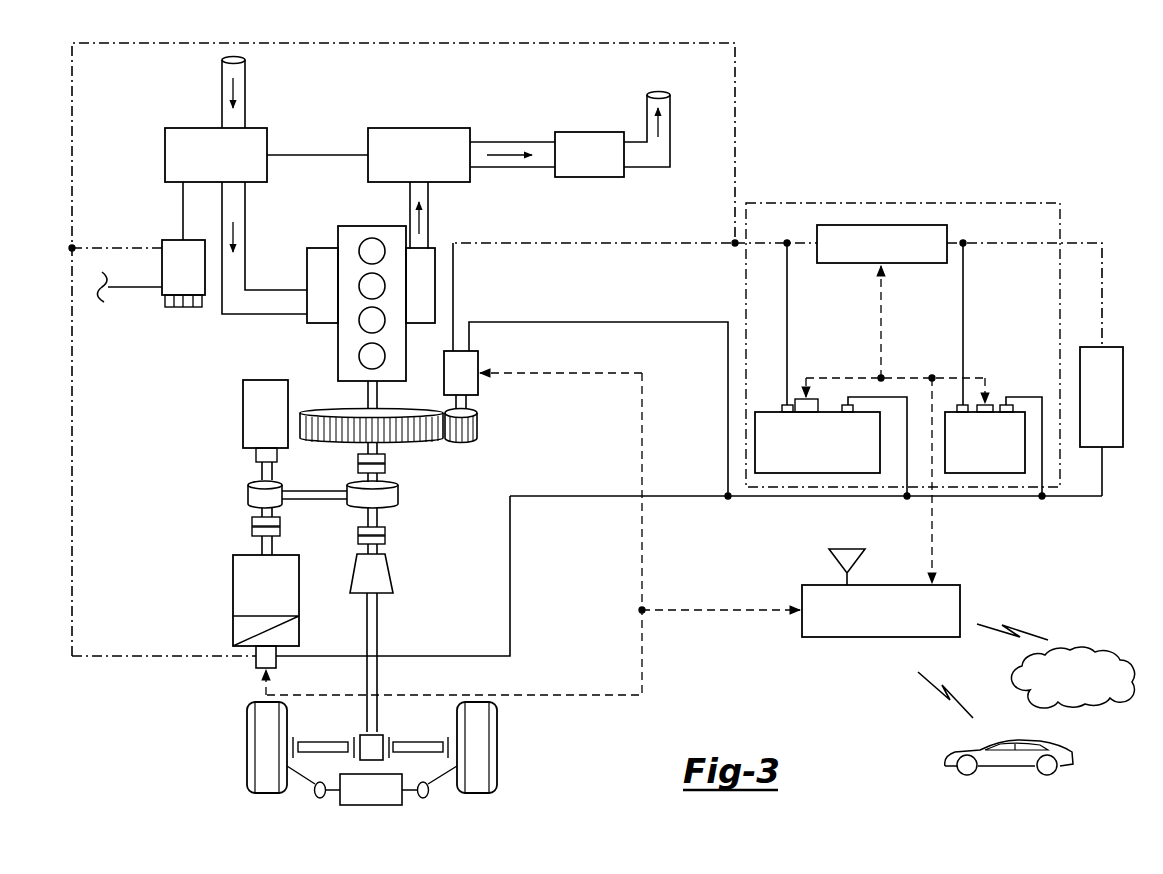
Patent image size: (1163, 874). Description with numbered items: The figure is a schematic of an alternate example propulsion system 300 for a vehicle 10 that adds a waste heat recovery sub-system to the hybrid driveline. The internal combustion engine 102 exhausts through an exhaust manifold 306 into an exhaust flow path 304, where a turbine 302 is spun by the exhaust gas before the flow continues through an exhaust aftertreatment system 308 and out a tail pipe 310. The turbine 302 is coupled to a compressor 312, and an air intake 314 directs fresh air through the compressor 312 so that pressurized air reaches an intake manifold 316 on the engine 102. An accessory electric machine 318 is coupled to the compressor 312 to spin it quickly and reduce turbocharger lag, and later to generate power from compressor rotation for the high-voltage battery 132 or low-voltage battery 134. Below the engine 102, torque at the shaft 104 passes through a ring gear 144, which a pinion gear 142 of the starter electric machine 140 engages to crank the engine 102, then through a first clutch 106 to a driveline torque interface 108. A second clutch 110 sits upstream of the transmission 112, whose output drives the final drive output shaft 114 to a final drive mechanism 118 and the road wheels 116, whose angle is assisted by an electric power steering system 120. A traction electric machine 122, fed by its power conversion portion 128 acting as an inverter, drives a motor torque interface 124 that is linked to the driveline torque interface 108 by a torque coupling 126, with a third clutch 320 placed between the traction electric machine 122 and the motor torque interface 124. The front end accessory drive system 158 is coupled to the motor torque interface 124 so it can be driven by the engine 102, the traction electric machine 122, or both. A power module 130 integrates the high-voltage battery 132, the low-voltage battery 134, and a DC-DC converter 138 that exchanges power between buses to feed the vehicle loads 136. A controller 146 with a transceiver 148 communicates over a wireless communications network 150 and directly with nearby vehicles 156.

The vehicle 10 is at (872, 132).
The internal combustion engine 102 is at (340, 360).
The shaft 104 is at (368, 396).
The first clutch 106 is at (358, 467).
The driveline torque interface 108 is at (398, 498).
The second clutch 110 is at (385, 539).
The transmission 112 is at (393, 572).
The final drive output shaft 114 is at (377, 672).
The road wheels 116 is at (247, 746).
The final drive mechanism 118 is at (365, 742).
The electric power steering system 120 is at (352, 805).
The traction electric machine 122 is at (276, 597).
The motor torque interface 124 is at (248, 487).
The torque coupling 126 is at (316, 501).
The power conversion portion 128 is at (233, 633).
The power module 130 is at (990, 203).
The high-voltage battery 132 is at (828, 455).
The low-voltage battery 134 is at (996, 455).
The vehicle loads 136 is at (1111, 408).
The DC-DC converter 138 is at (892, 256).
The starter electric machine 140 is at (472, 382).
The pinion gear 142 is at (477, 428).
The ring gear 144 is at (412, 444).
The controller 146 is at (892, 622).
The transceiver 148 is at (829, 560).
The wireless communications network 150 is at (1108, 650).
The vehicles 156 is at (1073, 757).
The front end accessory drive system 158 is at (274, 423).
The propulsion system 300 is at (170, 372).
The turbine 302 is at (430, 167).
The exhaust flow path 304 is at (428, 205).
The exhaust manifold 306 is at (435, 292).
The exhaust aftertreatment system 308 is at (599, 166).
The tail pipe 310 is at (647, 110).
The compressor 312 is at (227, 167).
The air intake 314 is at (245, 98).
The intake manifold 316 is at (322, 252).
The accessory electric machine 318 is at (194, 277).
The third clutch 320 is at (252, 529).